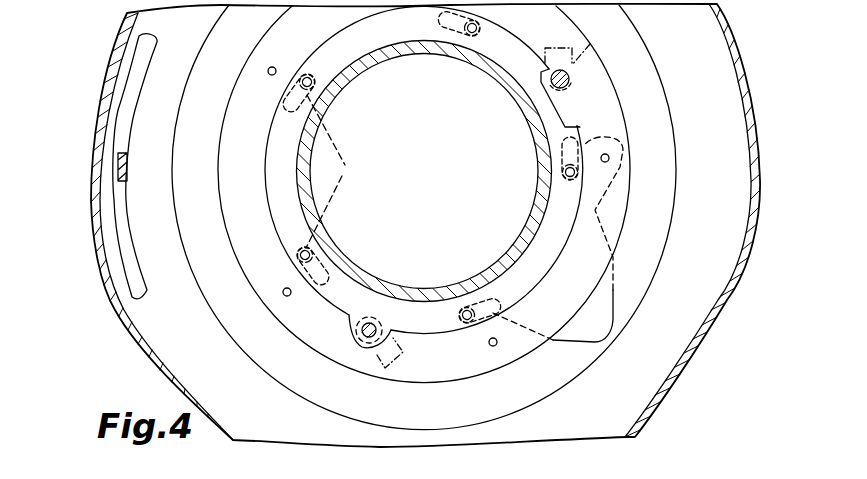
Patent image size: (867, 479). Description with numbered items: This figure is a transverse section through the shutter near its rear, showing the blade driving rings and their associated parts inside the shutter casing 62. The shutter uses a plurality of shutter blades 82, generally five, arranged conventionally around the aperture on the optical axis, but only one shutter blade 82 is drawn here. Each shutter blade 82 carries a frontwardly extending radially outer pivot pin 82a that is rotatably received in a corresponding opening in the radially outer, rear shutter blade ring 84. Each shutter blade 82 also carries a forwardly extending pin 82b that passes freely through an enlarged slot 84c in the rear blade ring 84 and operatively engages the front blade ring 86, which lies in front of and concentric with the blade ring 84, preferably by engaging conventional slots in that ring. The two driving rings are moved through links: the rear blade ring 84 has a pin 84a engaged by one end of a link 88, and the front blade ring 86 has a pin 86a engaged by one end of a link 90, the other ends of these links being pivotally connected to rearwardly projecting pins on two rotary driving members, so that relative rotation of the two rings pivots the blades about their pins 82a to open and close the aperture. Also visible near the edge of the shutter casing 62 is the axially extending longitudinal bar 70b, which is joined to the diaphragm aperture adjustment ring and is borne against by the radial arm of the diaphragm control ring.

The shutter casing 62 is at (715, 32).
The longitudinal bar 70b is at (128, 183).
The shutter blade 82 is at (612, 278).
The radially outer pivot pin 82a is at (268, 68).
The forwardly extending pin 82b is at (467, 35).
The rear shutter blade ring 84 is at (615, 107).
The pin 84a is at (569, 79).
The enlarged slot 84c is at (332, 171).
The front blade ring 86 is at (268, 143).
The pin 86a is at (355, 343).
The link 88 is at (590, 44).
The link 90 is at (378, 355).